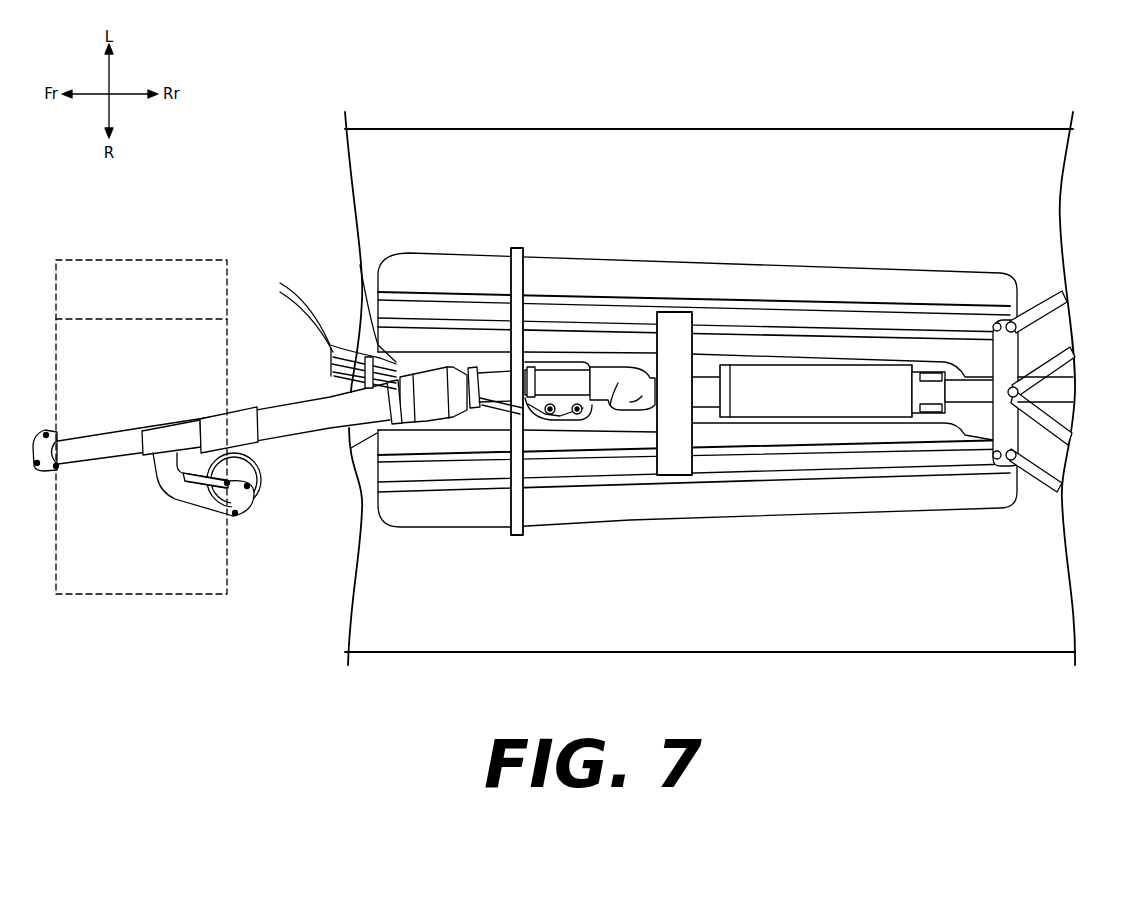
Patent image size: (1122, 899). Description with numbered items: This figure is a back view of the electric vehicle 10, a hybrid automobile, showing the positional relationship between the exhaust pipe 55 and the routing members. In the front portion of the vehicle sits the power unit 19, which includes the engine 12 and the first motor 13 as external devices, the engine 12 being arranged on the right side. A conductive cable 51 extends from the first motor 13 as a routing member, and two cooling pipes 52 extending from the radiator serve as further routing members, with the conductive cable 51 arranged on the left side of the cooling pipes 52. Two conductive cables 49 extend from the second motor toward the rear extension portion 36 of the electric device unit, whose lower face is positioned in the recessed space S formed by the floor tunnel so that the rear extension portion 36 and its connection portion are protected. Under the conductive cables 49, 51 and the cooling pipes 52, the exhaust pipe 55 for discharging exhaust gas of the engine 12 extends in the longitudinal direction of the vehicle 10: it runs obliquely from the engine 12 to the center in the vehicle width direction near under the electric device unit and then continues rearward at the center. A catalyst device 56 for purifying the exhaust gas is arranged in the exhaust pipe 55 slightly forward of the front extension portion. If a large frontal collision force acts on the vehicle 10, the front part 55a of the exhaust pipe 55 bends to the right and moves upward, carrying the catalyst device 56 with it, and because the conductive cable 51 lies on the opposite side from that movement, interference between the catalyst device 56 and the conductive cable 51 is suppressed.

The electric vehicle 10 is at (896, 105).
The engine 12 is at (114, 583).
The first motor 13 is at (183, 277).
The power unit 19 is at (175, 595).
The rear extension portion 36 is at (922, 420).
The conductive cables 49 is at (978, 414).
The conductive cable 51 is at (358, 358).
The cooling pipes 52 is at (281, 288).
The exhaust pipe 55 is at (620, 386).
The front part of the exhaust pipe 55a is at (303, 421).
The catalyst device 56 is at (430, 422).
The recessed space S is at (706, 362).